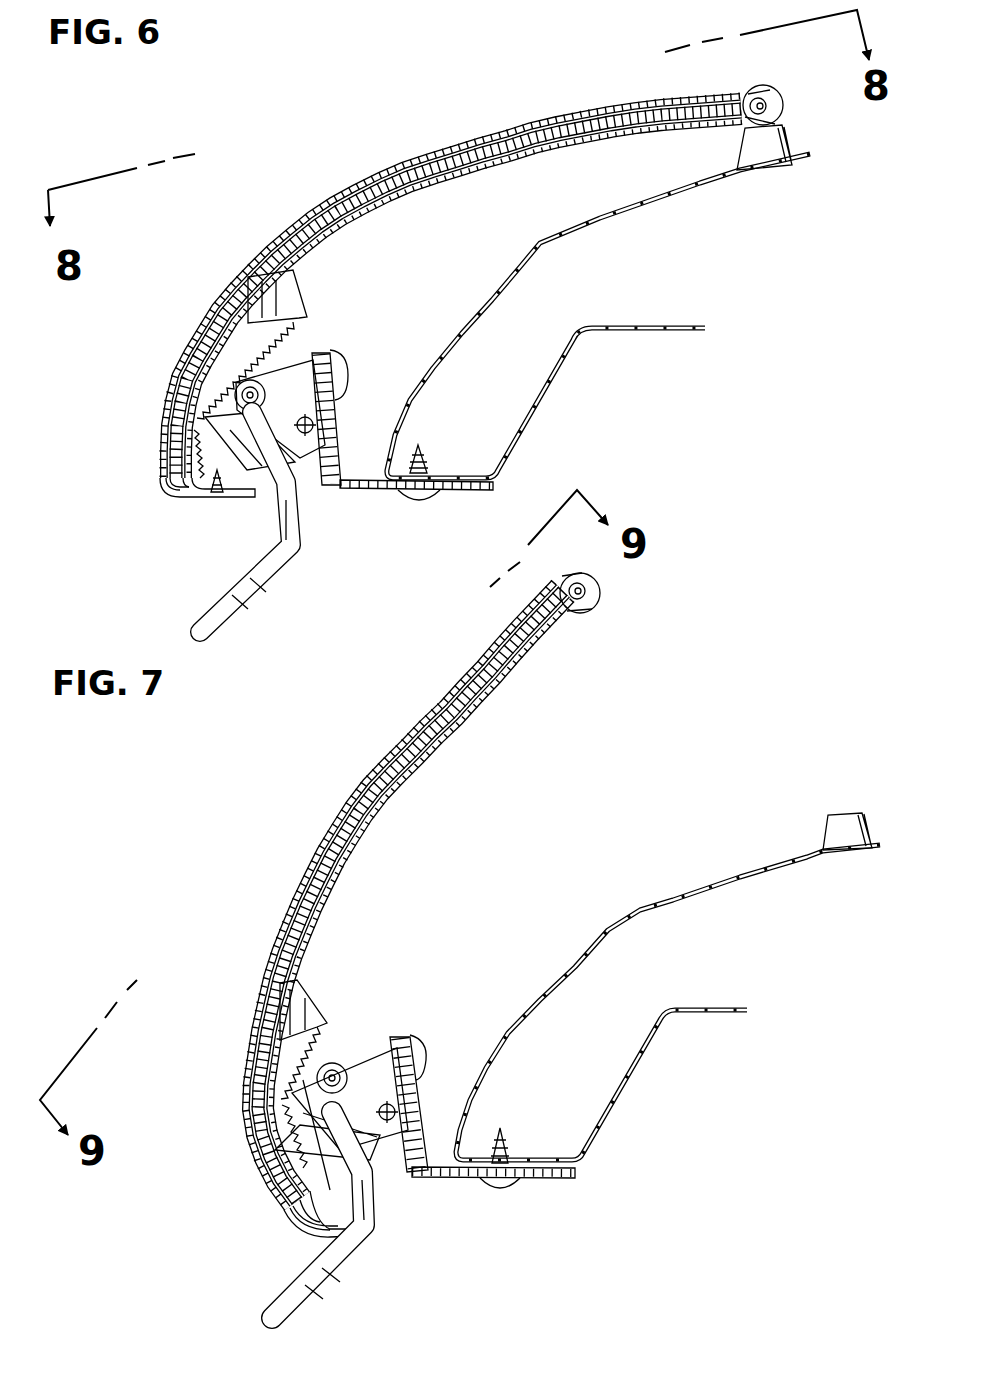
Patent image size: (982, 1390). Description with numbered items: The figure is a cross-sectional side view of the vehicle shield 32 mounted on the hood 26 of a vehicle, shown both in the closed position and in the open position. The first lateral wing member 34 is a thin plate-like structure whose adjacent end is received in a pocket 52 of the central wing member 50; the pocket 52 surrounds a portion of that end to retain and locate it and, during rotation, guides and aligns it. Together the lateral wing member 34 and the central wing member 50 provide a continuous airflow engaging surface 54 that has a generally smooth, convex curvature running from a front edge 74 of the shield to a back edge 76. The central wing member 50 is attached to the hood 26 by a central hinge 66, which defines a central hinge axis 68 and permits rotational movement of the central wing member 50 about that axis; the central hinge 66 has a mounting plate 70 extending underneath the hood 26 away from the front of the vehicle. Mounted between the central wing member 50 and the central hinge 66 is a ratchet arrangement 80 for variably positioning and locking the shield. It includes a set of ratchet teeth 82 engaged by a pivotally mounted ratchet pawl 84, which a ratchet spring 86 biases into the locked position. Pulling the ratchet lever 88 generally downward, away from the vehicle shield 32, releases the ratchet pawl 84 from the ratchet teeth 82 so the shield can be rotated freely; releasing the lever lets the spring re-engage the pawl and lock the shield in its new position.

In FIG. 6, the hood 26 is at (560, 236).
In FIG. 7, the hood 26 is at (622, 926).
In FIG. 6, the vehicle shield 32 is at (149, 377).
In FIG. 7, the vehicle shield 32 is at (165, 1165).
In FIG. 6, the first lateral wing member 34 is at (368, 189).
In FIG. 7, the first lateral wing member 34 is at (418, 717).
In FIG. 6, the central wing member 50 is at (156, 432).
In FIG. 7, the central wing member 50 is at (232, 1096).
In FIG. 6, the pocket 52 is at (782, 108).
In FIG. 7, the pocket 52 is at (597, 589).
In FIG. 6, the airflow engaging surface 54 is at (226, 281).
In FIG. 7, the airflow engaging surface 54 is at (342, 797).
In FIG. 6, the central hinge 66 is at (350, 421).
In FIG. 7, the central hinge 66 is at (432, 1111).
In FIG. 6, the central hinge axis 68 is at (314, 421).
In FIG. 7, the central hinge axis 68 is at (397, 1107).
In FIG. 6, the mounting plate 70 is at (472, 487).
In FIG. 7, the mounting plate 70 is at (541, 1176).
In FIG. 6, the front edge 74 is at (183, 497).
In FIG. 7, the front edge 74 is at (323, 1238).
In FIG. 6, the back edge 76 is at (766, 94).
In FIG. 7, the back edge 76 is at (557, 569).
In FIG. 6, the ratchet arrangement 80 is at (240, 388).
In FIG. 7, the ratchet arrangement 80 is at (366, 1044).
In FIG. 6, the ratchet teeth 82 is at (296, 326).
In FIG. 7, the ratchet teeth 82 is at (323, 1040).
In FIG. 6, the ratchet pawl 84 is at (192, 450).
In FIG. 7, the ratchet pawl 84 is at (290, 1153).
In FIG. 6, the ratchet spring 86 is at (293, 450).
In FIG. 7, the ratchet spring 86 is at (377, 1130).
In FIG. 6, the ratchet lever 88 is at (280, 566).
In FIG. 7, the ratchet lever 88 is at (356, 1262).